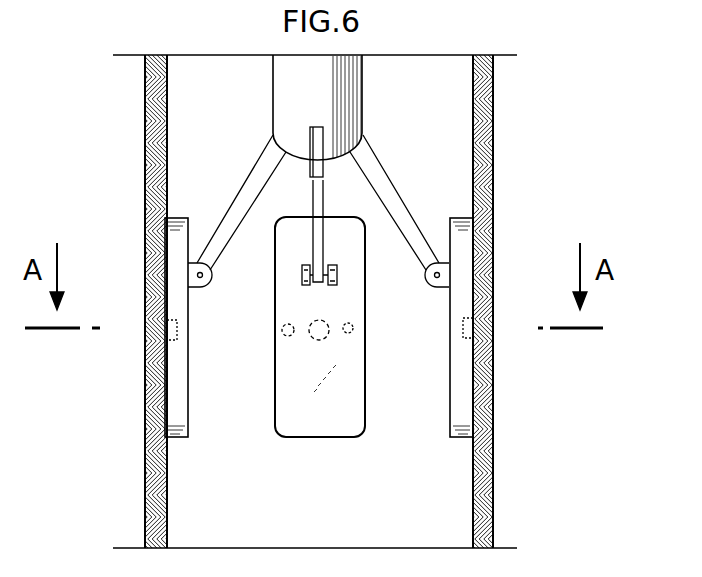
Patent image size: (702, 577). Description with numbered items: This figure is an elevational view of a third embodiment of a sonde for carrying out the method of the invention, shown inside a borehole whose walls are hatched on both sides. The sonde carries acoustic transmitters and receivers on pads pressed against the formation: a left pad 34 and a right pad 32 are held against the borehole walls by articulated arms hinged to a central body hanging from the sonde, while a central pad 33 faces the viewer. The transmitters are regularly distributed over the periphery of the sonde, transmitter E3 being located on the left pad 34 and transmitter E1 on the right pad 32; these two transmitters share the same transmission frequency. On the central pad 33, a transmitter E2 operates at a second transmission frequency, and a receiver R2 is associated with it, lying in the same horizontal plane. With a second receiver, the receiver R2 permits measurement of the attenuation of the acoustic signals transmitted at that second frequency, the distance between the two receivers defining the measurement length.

The pad 32 is at (463, 412).
The pad 33 is at (355, 426).
The pad 34 is at (177, 399).
The acoustic transmitter E1 is at (490, 345).
The acoustic transmitter E2 is at (318, 341).
The acoustic transmitter E3 is at (163, 343).
The acoustic receiver R2 is at (348, 334).